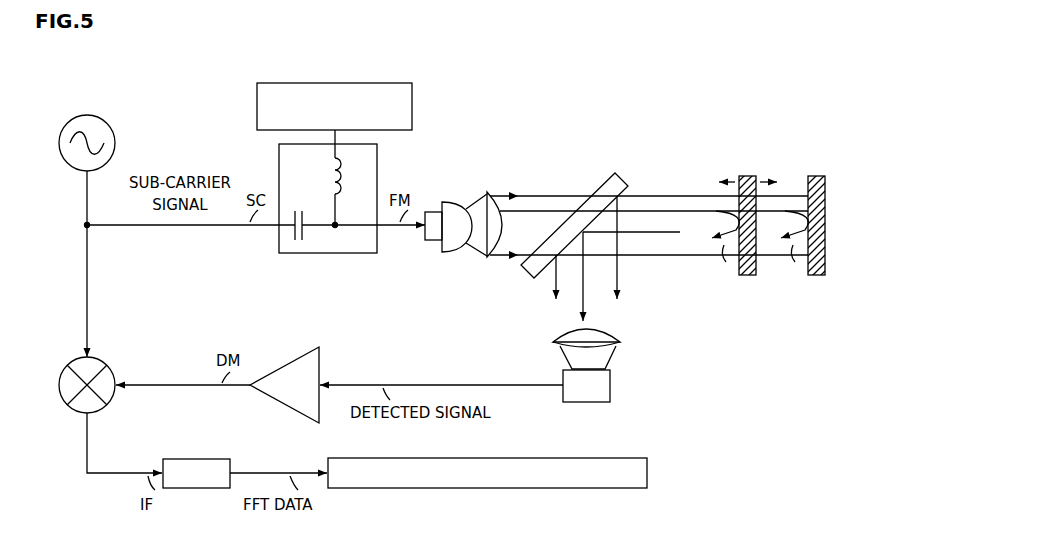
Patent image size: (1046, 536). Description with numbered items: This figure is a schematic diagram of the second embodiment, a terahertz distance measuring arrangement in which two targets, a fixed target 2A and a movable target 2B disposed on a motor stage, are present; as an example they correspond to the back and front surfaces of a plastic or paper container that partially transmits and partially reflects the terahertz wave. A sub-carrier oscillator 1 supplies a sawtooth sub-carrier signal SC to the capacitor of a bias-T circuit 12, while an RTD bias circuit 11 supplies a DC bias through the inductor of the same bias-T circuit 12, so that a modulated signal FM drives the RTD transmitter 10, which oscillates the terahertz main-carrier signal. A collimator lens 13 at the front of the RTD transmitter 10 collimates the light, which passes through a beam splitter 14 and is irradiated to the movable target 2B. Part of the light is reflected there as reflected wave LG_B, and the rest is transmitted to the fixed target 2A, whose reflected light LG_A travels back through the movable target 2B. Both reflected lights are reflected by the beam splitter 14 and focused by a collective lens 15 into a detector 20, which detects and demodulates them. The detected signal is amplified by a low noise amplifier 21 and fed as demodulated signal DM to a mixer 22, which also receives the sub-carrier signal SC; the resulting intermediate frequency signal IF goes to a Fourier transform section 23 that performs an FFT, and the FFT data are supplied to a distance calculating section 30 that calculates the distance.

The sub-carrier oscillator 1 is at (95, 117).
The RTD transmitter 10 is at (455, 200).
The RTD bias circuit 11 is at (392, 82).
The bias-T circuit 12 is at (290, 253).
The collimator lens 13 is at (492, 262).
The beam splitter 14 is at (608, 172).
The collective lens 15 is at (622, 335).
The detector 20 is at (563, 371).
The low noise amplifier 21 is at (308, 350).
The mixer 22 is at (92, 358).
The Fourier transform section 23 is at (208, 458).
The distance calculating section 30 is at (415, 456).
The fixed target 2A is at (812, 175).
The movable target 2B is at (748, 163).